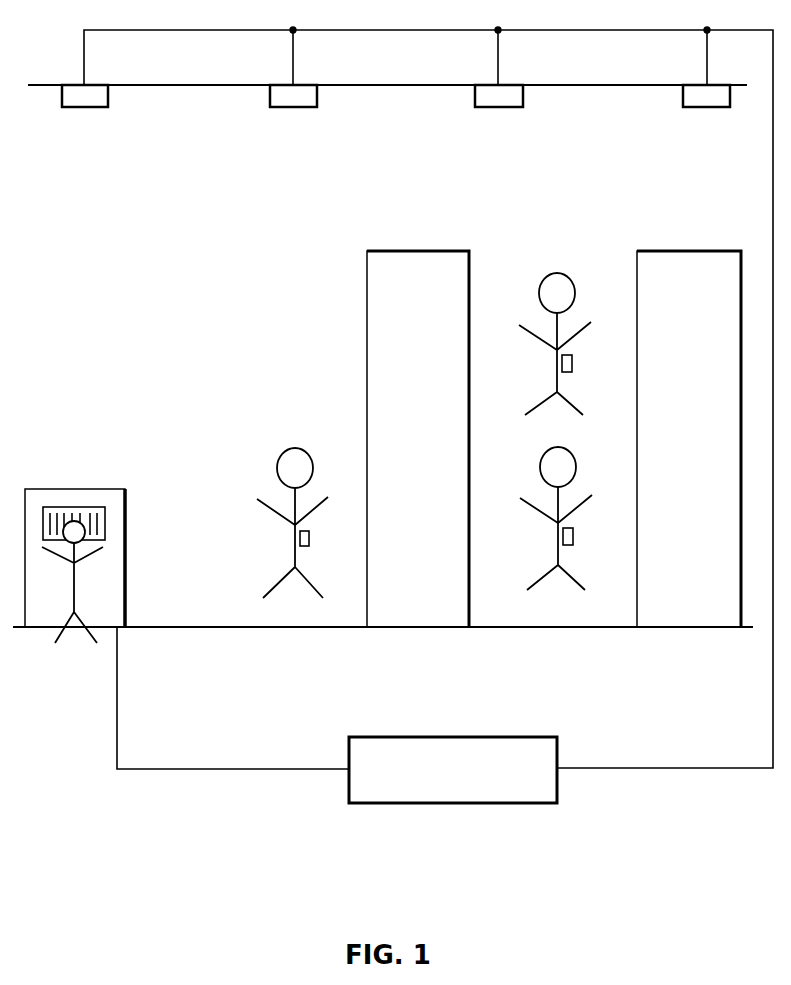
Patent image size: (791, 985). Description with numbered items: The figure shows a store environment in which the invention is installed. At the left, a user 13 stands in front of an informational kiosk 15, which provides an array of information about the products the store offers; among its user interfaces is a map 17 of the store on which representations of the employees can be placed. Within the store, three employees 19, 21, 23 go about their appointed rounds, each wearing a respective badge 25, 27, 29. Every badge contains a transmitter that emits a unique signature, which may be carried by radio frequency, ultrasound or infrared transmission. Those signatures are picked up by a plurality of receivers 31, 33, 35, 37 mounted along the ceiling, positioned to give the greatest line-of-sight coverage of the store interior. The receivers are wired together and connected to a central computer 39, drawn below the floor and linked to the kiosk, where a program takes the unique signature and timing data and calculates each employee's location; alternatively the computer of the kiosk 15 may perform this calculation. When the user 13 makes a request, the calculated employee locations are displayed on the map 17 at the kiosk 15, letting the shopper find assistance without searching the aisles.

The user 13 is at (56, 636).
The informational kiosk 15 is at (126, 575).
The map 17 is at (100, 520).
The employee 19 is at (275, 460).
The employee 21 is at (538, 287).
The employee 23 is at (540, 460).
The badge 25 is at (309, 537).
The badge 27 is at (572, 362).
The badge 29 is at (573, 536).
The receiver 31 is at (88, 107).
The receiver 33 is at (297, 107).
The receiver 35 is at (502, 107).
The receiver 37 is at (712, 107).
The central computer 39 is at (488, 803).